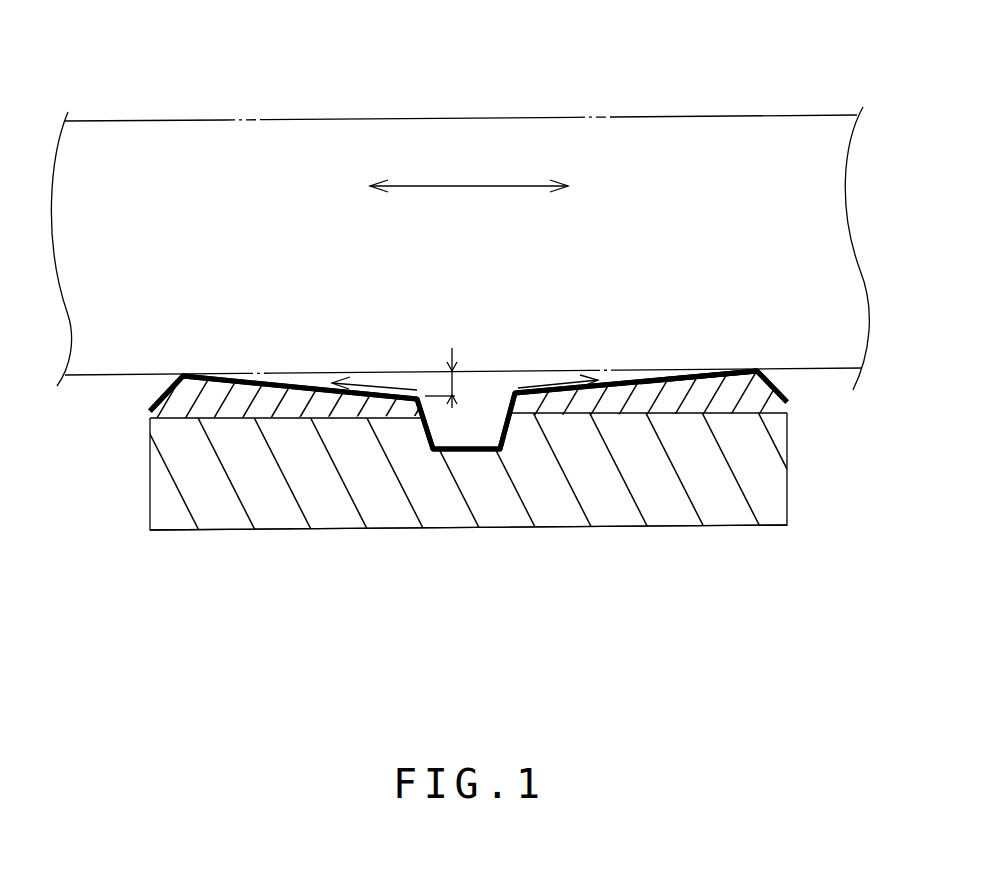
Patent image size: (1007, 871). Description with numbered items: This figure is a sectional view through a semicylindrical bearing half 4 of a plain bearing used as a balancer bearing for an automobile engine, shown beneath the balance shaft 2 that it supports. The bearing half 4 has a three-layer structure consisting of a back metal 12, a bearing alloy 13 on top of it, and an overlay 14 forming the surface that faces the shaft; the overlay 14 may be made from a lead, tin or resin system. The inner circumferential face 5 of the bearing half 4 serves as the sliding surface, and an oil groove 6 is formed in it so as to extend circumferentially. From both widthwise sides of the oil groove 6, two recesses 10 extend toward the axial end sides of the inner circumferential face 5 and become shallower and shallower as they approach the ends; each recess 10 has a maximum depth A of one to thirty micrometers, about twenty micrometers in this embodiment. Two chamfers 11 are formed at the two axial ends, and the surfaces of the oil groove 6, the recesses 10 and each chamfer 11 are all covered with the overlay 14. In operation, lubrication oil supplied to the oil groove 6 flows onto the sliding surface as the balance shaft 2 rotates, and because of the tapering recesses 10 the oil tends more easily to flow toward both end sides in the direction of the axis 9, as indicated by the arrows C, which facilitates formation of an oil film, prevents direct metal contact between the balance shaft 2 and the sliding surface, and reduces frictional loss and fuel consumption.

The balance shaft 2 is at (748, 112).
The bearing half 4 is at (623, 527).
The inner circumferential face 5 is at (637, 372).
The oil groove 6 is at (477, 428).
The axis 9 is at (470, 188).
The recess 10 is at (285, 375).
The chamfer 11 is at (162, 392).
The back metal 12 is at (773, 508).
The bearing alloy 13 is at (733, 407).
The overlay 14 is at (711, 372).
The maximum depth A is at (454, 378).
The arrows C is at (395, 388).